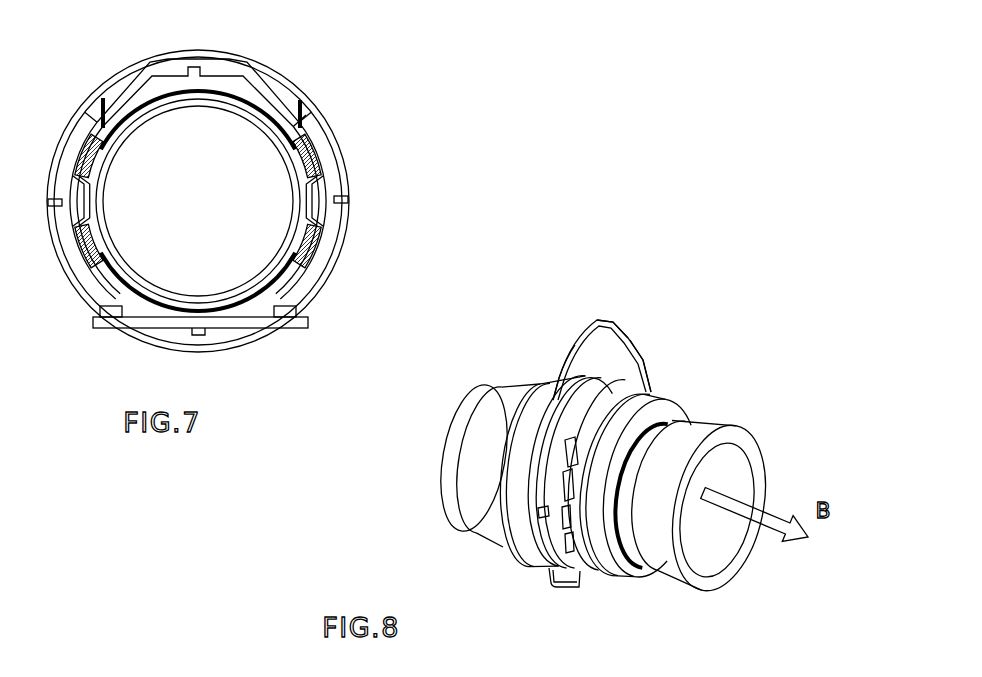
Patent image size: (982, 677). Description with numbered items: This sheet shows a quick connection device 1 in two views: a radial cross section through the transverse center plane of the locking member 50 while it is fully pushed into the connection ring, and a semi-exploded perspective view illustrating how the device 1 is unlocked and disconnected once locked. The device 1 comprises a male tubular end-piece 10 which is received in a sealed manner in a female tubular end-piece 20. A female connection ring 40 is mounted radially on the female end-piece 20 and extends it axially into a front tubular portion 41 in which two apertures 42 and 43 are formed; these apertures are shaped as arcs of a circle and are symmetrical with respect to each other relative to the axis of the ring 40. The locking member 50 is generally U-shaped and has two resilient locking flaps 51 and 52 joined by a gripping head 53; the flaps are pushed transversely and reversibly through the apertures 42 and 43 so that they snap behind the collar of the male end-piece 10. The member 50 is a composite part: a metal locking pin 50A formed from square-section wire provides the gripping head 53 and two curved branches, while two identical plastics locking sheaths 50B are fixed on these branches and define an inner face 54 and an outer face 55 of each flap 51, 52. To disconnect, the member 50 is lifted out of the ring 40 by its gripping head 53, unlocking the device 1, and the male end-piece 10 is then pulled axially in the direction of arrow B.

In FIG. 8, the connection device 1 is at (548, 592).
In FIG. 8, the male tubular end-piece 10 is at (722, 425).
In FIG. 7, the female tubular end-piece 20 is at (222, 108).
In FIG. 8, the female tubular end-piece 20 is at (487, 515).
In FIG. 8, the female connection ring 40 is at (660, 405).
In FIG. 7, the front tubular portion 41 is at (299, 70).
In FIG. 7, the aperture 42 is at (97, 128).
In FIG. 7, the aperture 43 is at (302, 118).
In FIG. 8, the locking member 50 is at (583, 320).
In FIG. 8, the metal locking pin 50A is at (620, 324).
In FIG. 8, the plastics locking sheath 50B is at (552, 405).
In FIG. 7, the locking flap 51 is at (100, 253).
In FIG. 7, the locking flap 52 is at (312, 258).
In FIG. 7, the gripping head 53 is at (197, 50).
In FIG. 7, the inner face 54 is at (87, 204).
In FIG. 7, the outer face 55 is at (324, 179).